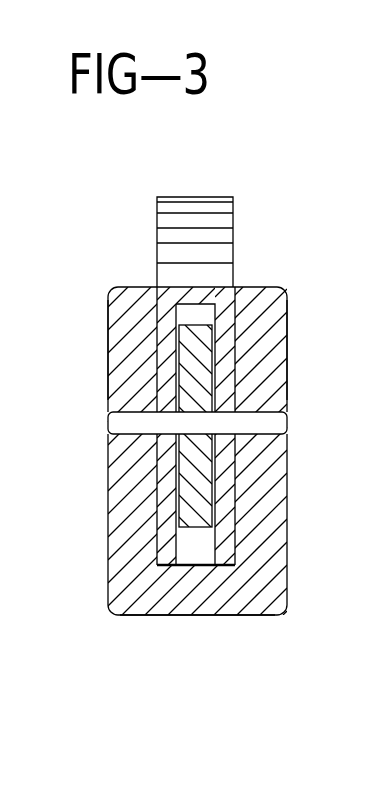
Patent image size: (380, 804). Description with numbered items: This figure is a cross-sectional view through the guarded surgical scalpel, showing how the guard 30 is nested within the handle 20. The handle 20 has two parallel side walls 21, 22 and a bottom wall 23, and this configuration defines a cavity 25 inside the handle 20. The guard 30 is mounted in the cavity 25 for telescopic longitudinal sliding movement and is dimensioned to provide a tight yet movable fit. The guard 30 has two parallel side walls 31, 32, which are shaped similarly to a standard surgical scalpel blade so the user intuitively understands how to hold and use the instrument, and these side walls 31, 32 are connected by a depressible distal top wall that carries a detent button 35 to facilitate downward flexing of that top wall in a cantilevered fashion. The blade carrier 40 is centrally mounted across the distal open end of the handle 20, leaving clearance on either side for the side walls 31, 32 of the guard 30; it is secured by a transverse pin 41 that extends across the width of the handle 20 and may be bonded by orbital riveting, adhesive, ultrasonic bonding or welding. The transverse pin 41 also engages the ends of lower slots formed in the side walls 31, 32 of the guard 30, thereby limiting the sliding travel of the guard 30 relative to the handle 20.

The handle 20 is at (160, 615).
The side wall 21 is at (108, 357).
The side wall 22 is at (287, 347).
The bottom wall 23 is at (243, 615).
The cavity 25 is at (198, 552).
The guard 30 is at (226, 296).
The side wall 31 is at (167, 507).
The side wall 32 is at (228, 478).
The detent button 35 is at (202, 202).
The blade carrier 40 is at (228, 563).
The transverse pin 41 is at (287, 425).